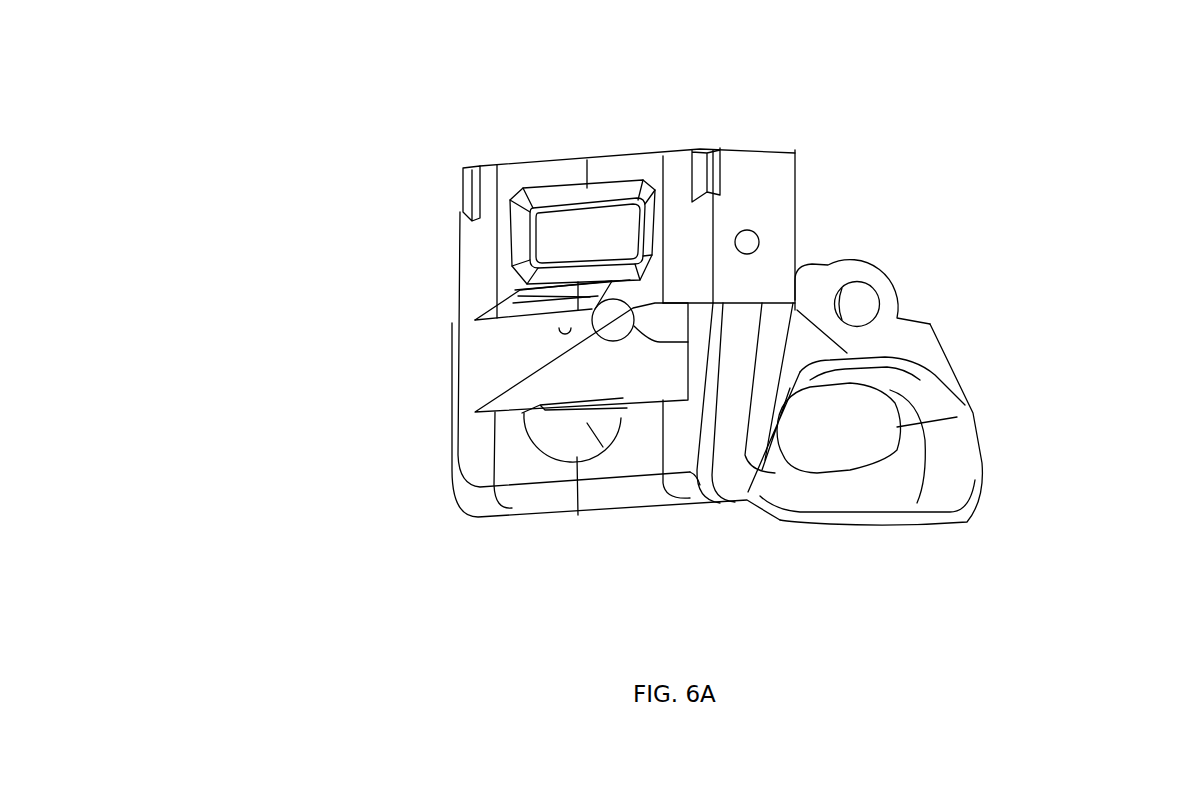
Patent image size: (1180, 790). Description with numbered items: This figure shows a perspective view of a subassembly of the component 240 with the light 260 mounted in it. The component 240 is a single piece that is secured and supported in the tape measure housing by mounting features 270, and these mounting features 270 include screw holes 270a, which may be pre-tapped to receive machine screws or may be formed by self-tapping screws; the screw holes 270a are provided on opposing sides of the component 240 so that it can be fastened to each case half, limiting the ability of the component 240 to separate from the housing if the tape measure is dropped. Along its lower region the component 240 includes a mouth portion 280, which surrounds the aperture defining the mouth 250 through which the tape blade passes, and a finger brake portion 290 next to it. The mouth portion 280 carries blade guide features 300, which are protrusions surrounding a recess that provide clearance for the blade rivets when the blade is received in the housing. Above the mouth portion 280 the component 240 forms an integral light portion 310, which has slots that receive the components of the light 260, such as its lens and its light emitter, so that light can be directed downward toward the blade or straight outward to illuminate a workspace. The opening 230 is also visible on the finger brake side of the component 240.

The opening 230 is at (807, 458).
The component 240 is at (975, 263).
The mouth 250 is at (522, 370).
The light 260 is at (562, 237).
The mounting features 270 is at (621, 316).
The screw holes 270a is at (752, 236).
The mouth portion 280 is at (607, 487).
The finger brake portion 290 is at (957, 460).
The blade guide features 300 is at (640, 398).
The light portion 310 is at (488, 190).